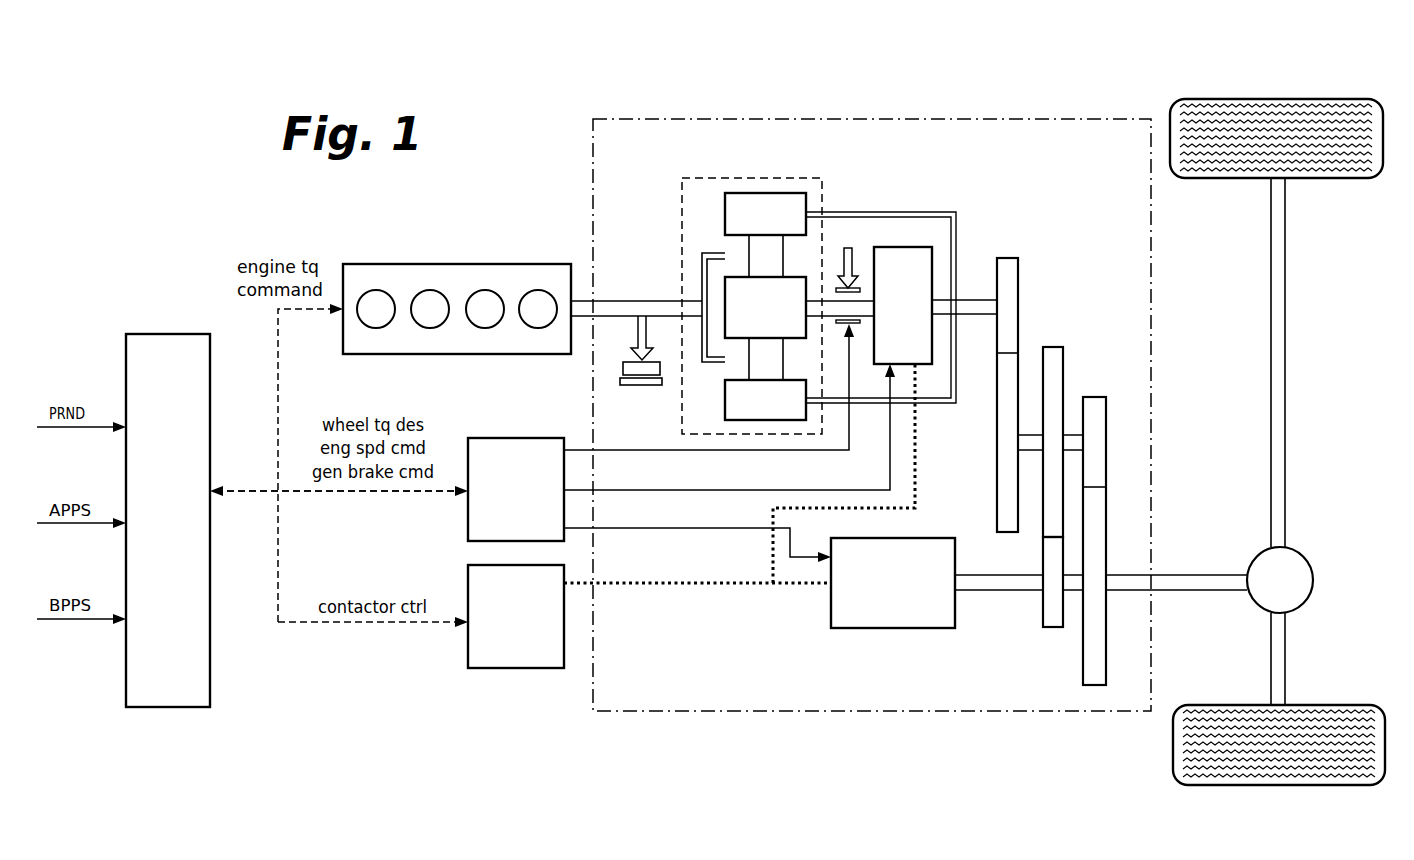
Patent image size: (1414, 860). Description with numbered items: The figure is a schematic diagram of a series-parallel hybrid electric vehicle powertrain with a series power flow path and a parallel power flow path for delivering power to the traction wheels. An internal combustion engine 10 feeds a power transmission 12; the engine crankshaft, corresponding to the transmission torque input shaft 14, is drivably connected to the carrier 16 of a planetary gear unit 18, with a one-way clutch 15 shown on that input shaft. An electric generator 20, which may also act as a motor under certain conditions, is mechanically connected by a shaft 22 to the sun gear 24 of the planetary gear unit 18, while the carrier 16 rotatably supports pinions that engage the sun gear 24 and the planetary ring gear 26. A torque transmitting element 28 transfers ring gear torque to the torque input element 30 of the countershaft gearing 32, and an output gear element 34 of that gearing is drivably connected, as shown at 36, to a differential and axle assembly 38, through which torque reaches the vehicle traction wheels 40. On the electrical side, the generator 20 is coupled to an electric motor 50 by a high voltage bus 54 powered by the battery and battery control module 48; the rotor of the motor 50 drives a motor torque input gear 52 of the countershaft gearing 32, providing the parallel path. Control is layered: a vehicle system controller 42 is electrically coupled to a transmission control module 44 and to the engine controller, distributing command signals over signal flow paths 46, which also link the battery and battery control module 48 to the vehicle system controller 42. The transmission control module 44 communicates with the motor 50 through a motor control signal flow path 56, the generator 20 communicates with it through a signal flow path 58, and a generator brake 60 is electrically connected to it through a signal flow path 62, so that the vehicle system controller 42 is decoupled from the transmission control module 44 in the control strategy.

The internal combustion engine 10 is at (493, 354).
The power transmission 12 is at (1066, 108).
The transmission torque input shaft 14 is at (625, 300).
The one-way clutch 15 is at (623, 370).
The carrier 16 is at (716, 253).
The planetary gear unit 18 is at (817, 178).
The electric generator 20 is at (933, 260).
The shaft 22 is at (812, 315).
The sun gear 24 is at (725, 290).
The planetary ring gear 26 is at (725, 200).
The torque transmitting element 28 is at (953, 400).
The torque input element 30 is at (1018, 287).
The countershaft gearing 32 is at (1077, 426).
The output gear element 34 is at (1083, 652).
The drive connection 36 is at (1200, 591).
The differential and axle assembly 38 is at (1246, 556).
The vehicle traction wheels 40 is at (1302, 99).
The vehicle system controller 42 is at (183, 334).
The transmission control module 44 is at (512, 438).
The signal flow paths 46 is at (348, 497).
The battery and battery control module 48 is at (512, 668).
The electric motor 50 is at (900, 628).
The motor torque input gear 52 is at (1043, 608).
The high voltage bus 54 is at (762, 587).
The motor control signal flow path 56 is at (756, 530).
The signal flow path 58 is at (860, 485).
The generator brake 60 is at (858, 290).
The signal flow path 62 is at (670, 450).